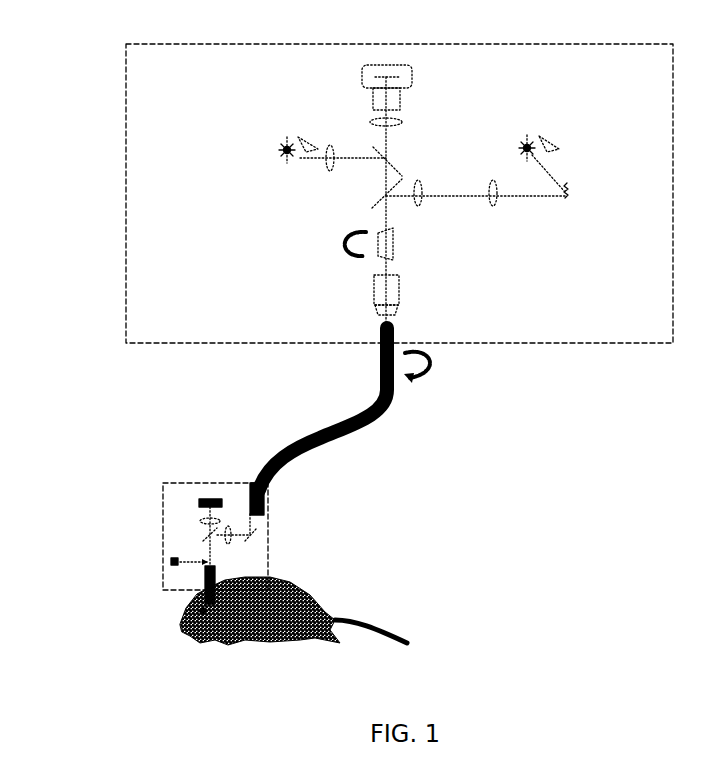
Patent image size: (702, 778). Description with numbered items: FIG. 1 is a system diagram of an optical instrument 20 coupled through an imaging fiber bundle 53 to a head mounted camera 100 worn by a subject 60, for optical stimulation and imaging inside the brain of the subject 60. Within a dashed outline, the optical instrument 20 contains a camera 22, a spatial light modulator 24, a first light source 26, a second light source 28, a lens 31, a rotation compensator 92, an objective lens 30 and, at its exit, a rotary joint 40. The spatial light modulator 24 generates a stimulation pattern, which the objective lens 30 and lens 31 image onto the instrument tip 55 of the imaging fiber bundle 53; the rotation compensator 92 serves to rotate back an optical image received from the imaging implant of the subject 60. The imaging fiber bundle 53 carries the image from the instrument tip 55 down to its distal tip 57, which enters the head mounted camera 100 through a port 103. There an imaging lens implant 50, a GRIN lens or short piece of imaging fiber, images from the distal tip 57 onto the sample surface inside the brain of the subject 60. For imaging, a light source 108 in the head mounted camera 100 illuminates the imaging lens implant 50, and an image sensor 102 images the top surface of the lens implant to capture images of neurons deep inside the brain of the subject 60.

The optical instrument 20 is at (187, 73).
The camera 22 is at (416, 95).
The spatial light modulator 24 is at (572, 219).
The first light source 26 is at (589, 163).
The second light source 28 is at (277, 158).
The objective lens 30 is at (337, 298).
The lens 31 is at (487, 186).
The rotary joint 40 is at (462, 374).
The imaging lens implant 50 is at (217, 578).
The imaging fiber bundle 53 is at (350, 430).
The instrument tip 55 is at (380, 360).
The distal tip 57 is at (273, 512).
The subject 60 is at (190, 606).
The rotation compensator 92 is at (417, 251).
The head mounted camera 100 is at (203, 482).
The image sensor 102 is at (200, 503).
The port 103 is at (256, 482).
The light source 108 is at (172, 562).